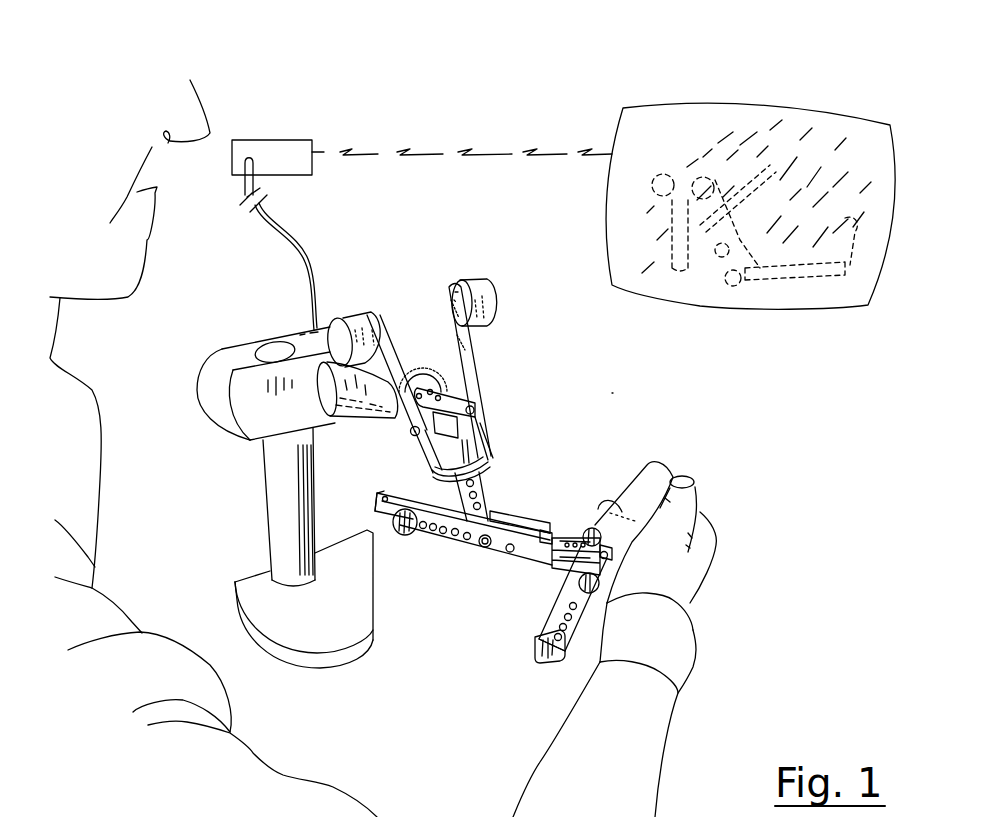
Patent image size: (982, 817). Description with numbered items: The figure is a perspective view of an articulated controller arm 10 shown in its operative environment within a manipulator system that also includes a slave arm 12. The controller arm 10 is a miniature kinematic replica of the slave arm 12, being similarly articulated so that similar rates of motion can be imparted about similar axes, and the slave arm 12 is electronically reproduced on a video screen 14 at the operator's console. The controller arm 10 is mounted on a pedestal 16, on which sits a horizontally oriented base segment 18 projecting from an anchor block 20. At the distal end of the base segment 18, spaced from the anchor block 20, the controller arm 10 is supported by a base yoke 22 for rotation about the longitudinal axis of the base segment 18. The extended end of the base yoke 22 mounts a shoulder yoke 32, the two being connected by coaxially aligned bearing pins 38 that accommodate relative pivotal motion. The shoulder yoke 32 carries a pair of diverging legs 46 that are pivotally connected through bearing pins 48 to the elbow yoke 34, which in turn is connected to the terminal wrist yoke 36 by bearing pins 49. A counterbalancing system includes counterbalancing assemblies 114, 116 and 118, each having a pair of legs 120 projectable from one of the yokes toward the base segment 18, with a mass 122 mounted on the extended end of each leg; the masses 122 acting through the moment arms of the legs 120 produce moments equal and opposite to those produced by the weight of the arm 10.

The controller arm 10 is at (614, 392).
The slave arm 12 is at (797, 173).
The video screen 14 is at (663, 137).
The pedestal 16 is at (258, 492).
The base segment 18 is at (345, 424).
The anchor block 20 is at (233, 350).
The base yoke 22 is at (447, 383).
The shoulder yoke 32 is at (490, 393).
The elbow yoke 34 is at (520, 504).
The wrist yoke 36 is at (581, 517).
The bearing pins 38 is at (412, 435).
The diverging legs 46 is at (483, 490).
The bearing pins 48 is at (485, 548).
The bearing pins 49 is at (609, 548).
The counterbalancing assembly 114 is at (526, 317).
The counterbalancing assembly 116 is at (420, 547).
The counterbalancing assembly 118 is at (527, 665).
The legs 120 is at (457, 322).
The mass 122 is at (348, 322).